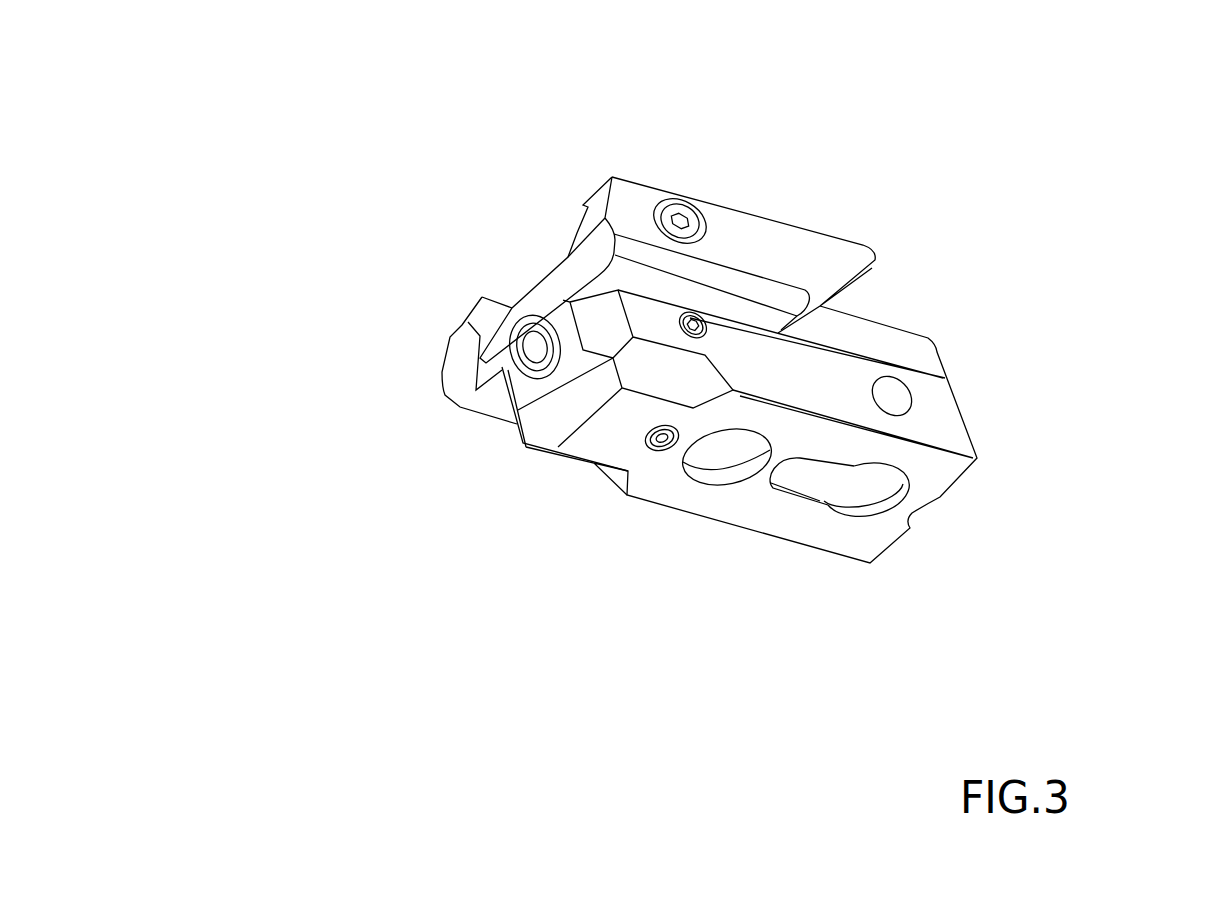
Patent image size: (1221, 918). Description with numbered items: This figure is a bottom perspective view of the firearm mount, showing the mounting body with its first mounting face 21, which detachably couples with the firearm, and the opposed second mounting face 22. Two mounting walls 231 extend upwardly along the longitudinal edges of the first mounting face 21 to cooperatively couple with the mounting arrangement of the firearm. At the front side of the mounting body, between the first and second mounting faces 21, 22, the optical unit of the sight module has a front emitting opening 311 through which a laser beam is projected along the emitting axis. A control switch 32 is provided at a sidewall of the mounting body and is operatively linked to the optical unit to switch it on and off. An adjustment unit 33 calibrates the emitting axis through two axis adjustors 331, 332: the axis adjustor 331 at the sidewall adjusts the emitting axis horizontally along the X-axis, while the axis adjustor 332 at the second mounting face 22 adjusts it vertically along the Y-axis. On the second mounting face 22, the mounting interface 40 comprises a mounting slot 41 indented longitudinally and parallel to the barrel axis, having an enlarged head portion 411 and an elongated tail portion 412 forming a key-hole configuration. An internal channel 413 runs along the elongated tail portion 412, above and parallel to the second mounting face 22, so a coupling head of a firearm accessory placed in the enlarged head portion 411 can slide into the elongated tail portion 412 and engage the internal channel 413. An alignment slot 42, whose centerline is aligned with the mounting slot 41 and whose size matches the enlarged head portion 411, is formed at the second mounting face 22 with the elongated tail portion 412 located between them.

The first mounting face 21 is at (878, 315).
The second mounting face 22 is at (598, 445).
The mounting wall 231 is at (497, 300).
The front emitting opening 311 is at (520, 357).
The control switch 32 is at (893, 395).
The adjustment unit 33 is at (378, 597).
The axis adjustor 331 is at (700, 313).
The axis adjustor 332 is at (650, 447).
The mounting interface 40 is at (590, 676).
The mounting slot 41 is at (710, 690).
The enlarged head portion 411 is at (855, 518).
The elongated tail portion 412 is at (786, 503).
The internal channel 413 is at (815, 494).
The alignment slot 42 is at (706, 478).